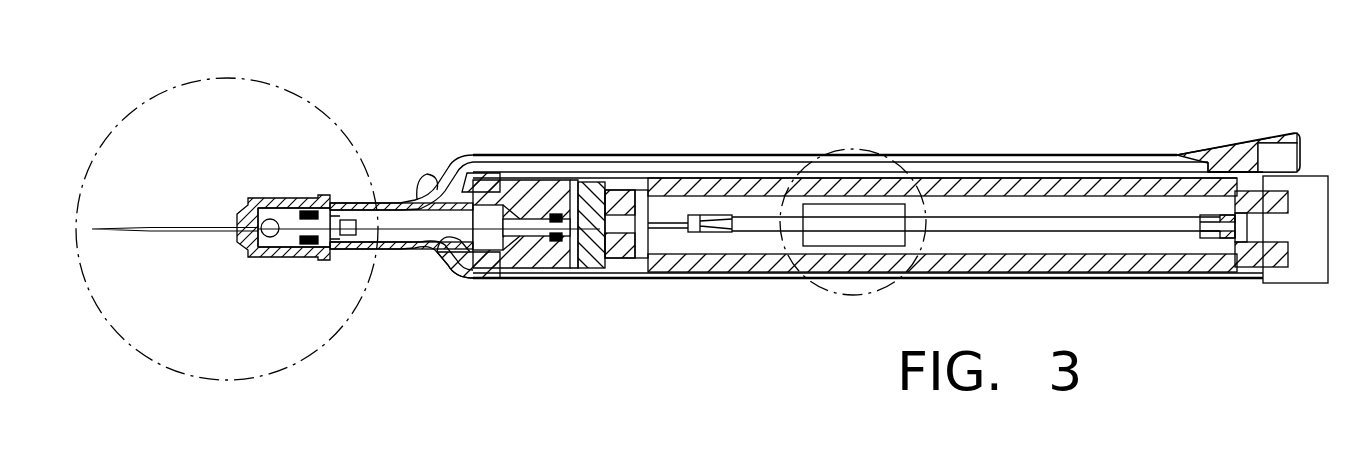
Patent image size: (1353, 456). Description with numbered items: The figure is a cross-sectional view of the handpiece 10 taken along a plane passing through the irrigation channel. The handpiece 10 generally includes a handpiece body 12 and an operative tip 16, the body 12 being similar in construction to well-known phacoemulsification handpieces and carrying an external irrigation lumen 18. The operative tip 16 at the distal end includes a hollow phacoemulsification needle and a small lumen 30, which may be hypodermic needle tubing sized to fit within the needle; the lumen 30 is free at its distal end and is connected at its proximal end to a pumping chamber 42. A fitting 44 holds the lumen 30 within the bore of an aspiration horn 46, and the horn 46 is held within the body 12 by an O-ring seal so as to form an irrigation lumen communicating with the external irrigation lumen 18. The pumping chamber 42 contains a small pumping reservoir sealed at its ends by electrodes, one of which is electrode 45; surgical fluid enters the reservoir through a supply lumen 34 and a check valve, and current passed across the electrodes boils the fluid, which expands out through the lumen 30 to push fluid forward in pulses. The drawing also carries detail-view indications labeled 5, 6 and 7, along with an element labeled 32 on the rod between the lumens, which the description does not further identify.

The detail view reference 5 is at (654, 445).
The detail circle of needle hub 6 is at (176, 372).
The detail circle of sensor block 7 is at (855, 147).
The handpiece 10 is at (1165, 100).
The handpiece body 12 is at (585, 283).
The operative tip 16 is at (234, 199).
The external irrigation lumen 18 is at (686, 155).
The lumen 30 is at (676, 235).
The connector 32 is at (706, 235).
The lumen 34 is at (1095, 215).
The pumping chamber 42 is at (815, 204).
The fitting 44 is at (617, 185).
The electrode 45 is at (1278, 268).
The aspiration horn 46 is at (462, 243).